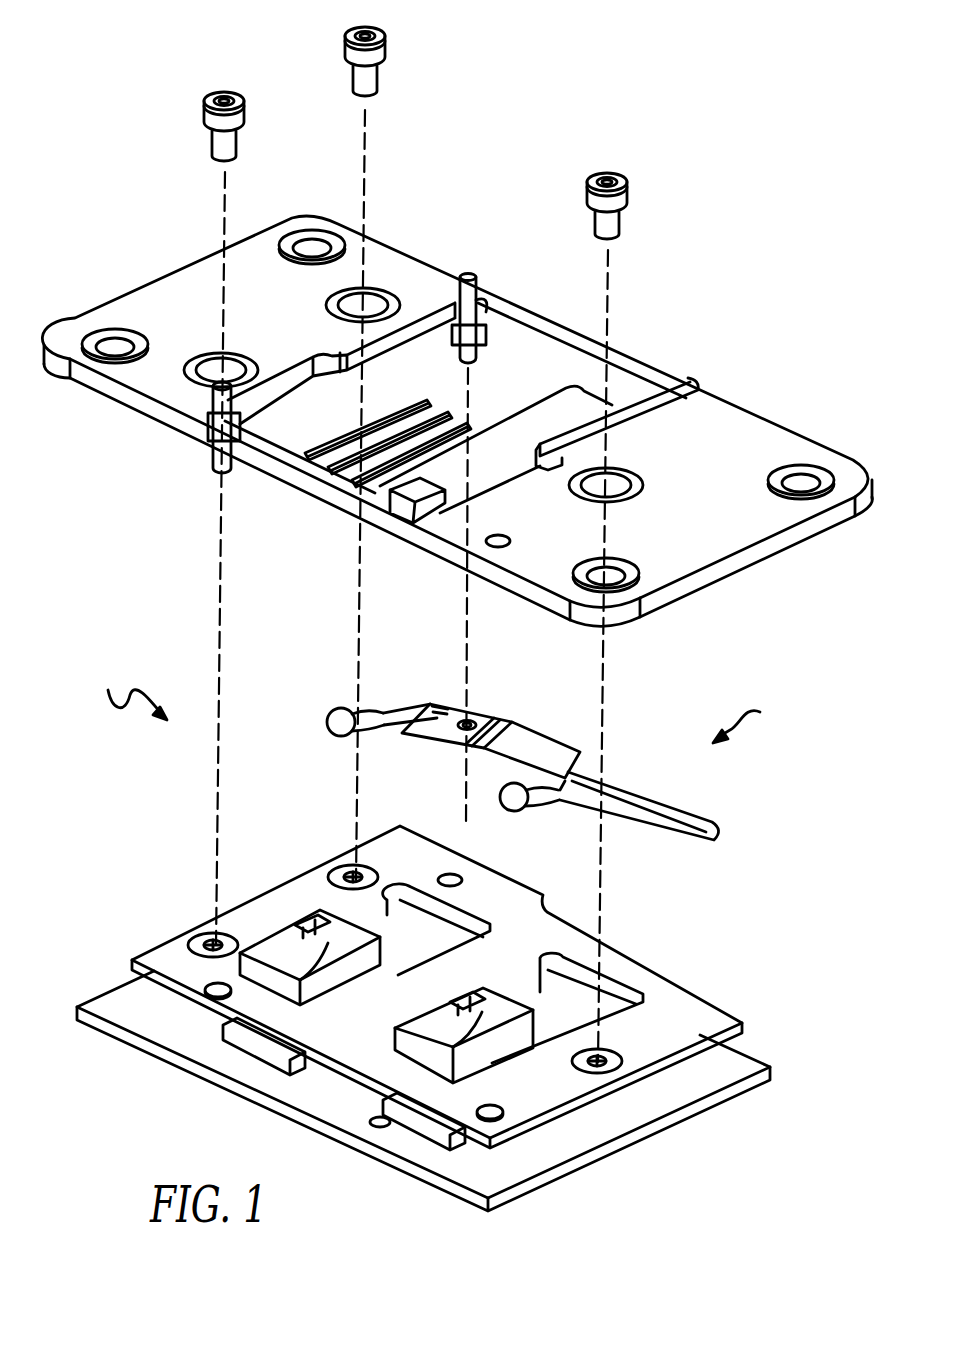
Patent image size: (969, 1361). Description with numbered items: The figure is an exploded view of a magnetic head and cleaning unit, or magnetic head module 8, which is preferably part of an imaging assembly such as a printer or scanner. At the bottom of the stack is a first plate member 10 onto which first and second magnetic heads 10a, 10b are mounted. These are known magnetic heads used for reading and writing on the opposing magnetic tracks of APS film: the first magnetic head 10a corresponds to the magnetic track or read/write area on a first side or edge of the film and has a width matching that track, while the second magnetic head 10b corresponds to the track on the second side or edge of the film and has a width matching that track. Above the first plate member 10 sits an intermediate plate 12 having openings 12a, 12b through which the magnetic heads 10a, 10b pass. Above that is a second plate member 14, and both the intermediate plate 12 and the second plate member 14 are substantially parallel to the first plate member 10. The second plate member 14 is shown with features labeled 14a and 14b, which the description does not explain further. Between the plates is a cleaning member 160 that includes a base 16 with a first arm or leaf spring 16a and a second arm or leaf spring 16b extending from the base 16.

The magnetic head module 8 is at (129, 690).
The first plate member 10 is at (635, 1148).
The first magnetic head 10a is at (258, 940).
The second magnetic head 10b is at (484, 1040).
The intermediate plate 12 is at (712, 1012).
The opening 12a is at (415, 905).
The opening 12b is at (610, 990).
The second plate member 14 is at (457, 421).
The first rail 14a is at (305, 400).
The second rail 14b is at (518, 440).
The base 16 is at (531, 750).
The first arm or leaf spring 16a is at (340, 712).
The second arm or leaf spring 16b is at (500, 808).
The cleaning member 160 is at (762, 717).